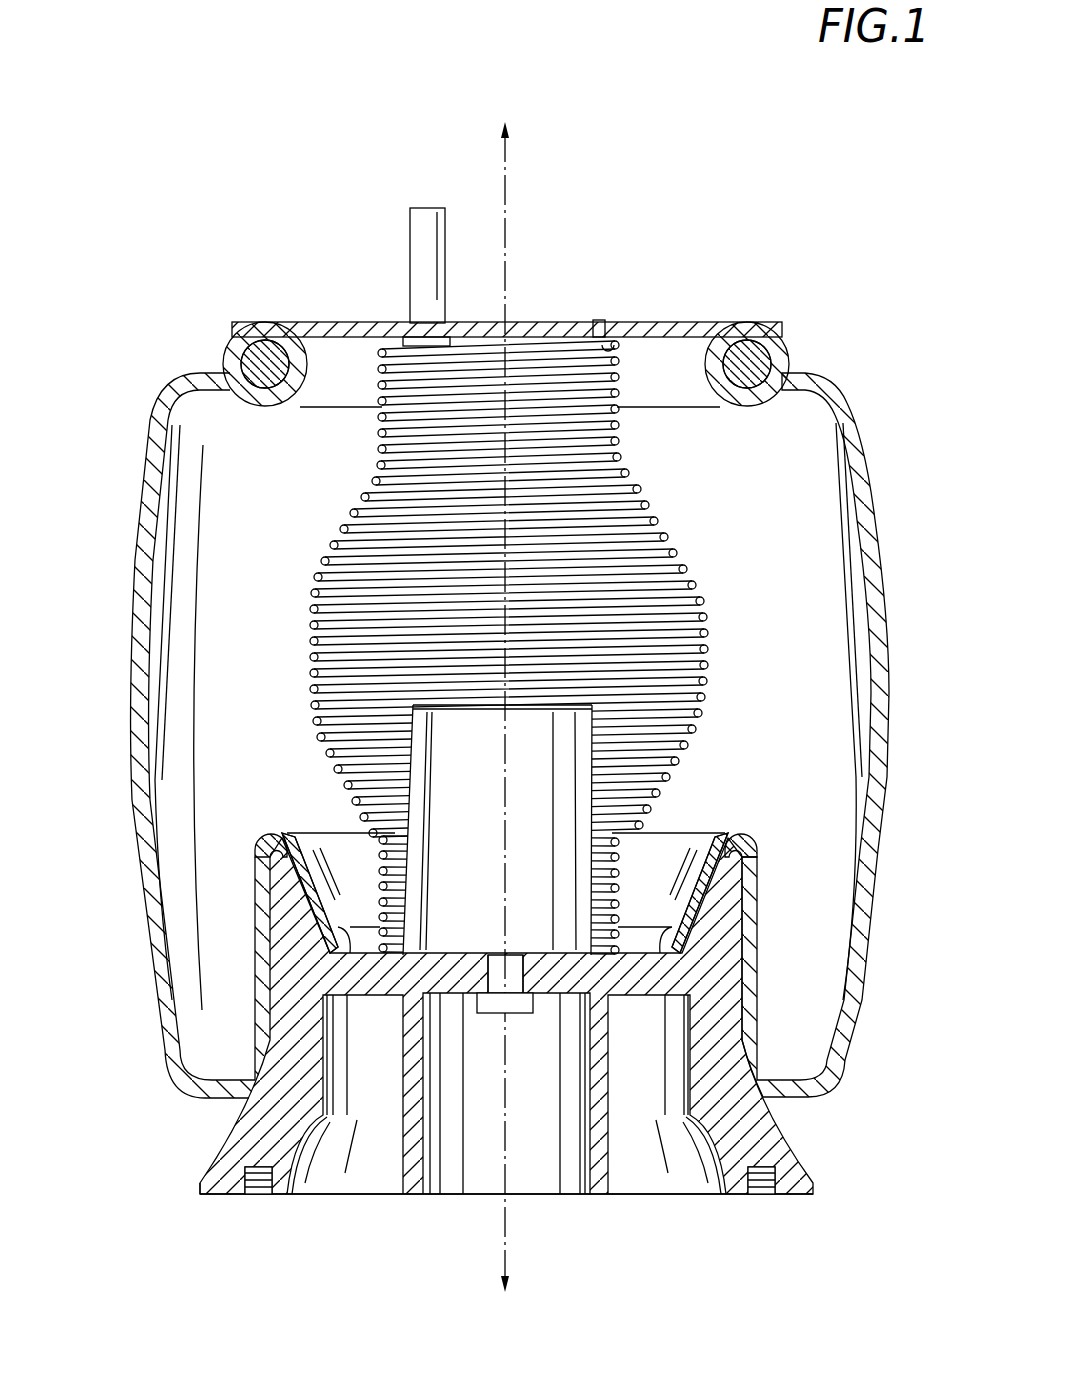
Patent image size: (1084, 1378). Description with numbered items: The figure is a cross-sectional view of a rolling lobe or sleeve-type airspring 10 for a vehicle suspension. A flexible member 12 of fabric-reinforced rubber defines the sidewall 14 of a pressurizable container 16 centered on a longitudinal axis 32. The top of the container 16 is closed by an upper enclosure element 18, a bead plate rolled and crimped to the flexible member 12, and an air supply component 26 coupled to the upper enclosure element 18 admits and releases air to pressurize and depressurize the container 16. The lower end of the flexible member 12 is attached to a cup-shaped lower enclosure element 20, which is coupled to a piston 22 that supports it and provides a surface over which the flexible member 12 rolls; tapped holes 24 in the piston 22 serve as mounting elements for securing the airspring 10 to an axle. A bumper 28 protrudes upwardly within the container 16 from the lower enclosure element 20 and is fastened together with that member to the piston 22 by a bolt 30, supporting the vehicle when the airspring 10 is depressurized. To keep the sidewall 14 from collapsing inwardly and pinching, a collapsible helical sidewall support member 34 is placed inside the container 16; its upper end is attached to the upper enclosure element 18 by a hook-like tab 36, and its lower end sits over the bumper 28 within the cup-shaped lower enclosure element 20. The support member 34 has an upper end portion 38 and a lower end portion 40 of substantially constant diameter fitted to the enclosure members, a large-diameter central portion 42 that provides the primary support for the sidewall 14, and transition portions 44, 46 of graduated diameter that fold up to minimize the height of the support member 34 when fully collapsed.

The airspring 10 is at (290, 140).
The flexible member 12 is at (135, 1080).
The sidewall 14 is at (120, 672).
The container 16 is at (818, 512).
The upper enclosure element 18 is at (726, 322).
The lower enclosure element 20 is at (335, 850).
The piston 22 is at (775, 1153).
The tapped holes 24 is at (262, 1196).
The air supply component 26 is at (408, 234).
The bumper 28 is at (445, 752).
The bolt 30 is at (528, 1015).
The longitudinal axis 32 is at (510, 176).
The sidewall support member 34 is at (520, 647).
The hook-like tab 36 is at (612, 340).
The upper end portion 38 is at (630, 418).
The lower end portion 40 is at (642, 878).
The central portion 42 is at (708, 668).
The transition portion 44 is at (688, 557).
The transition portion 46 is at (682, 778).